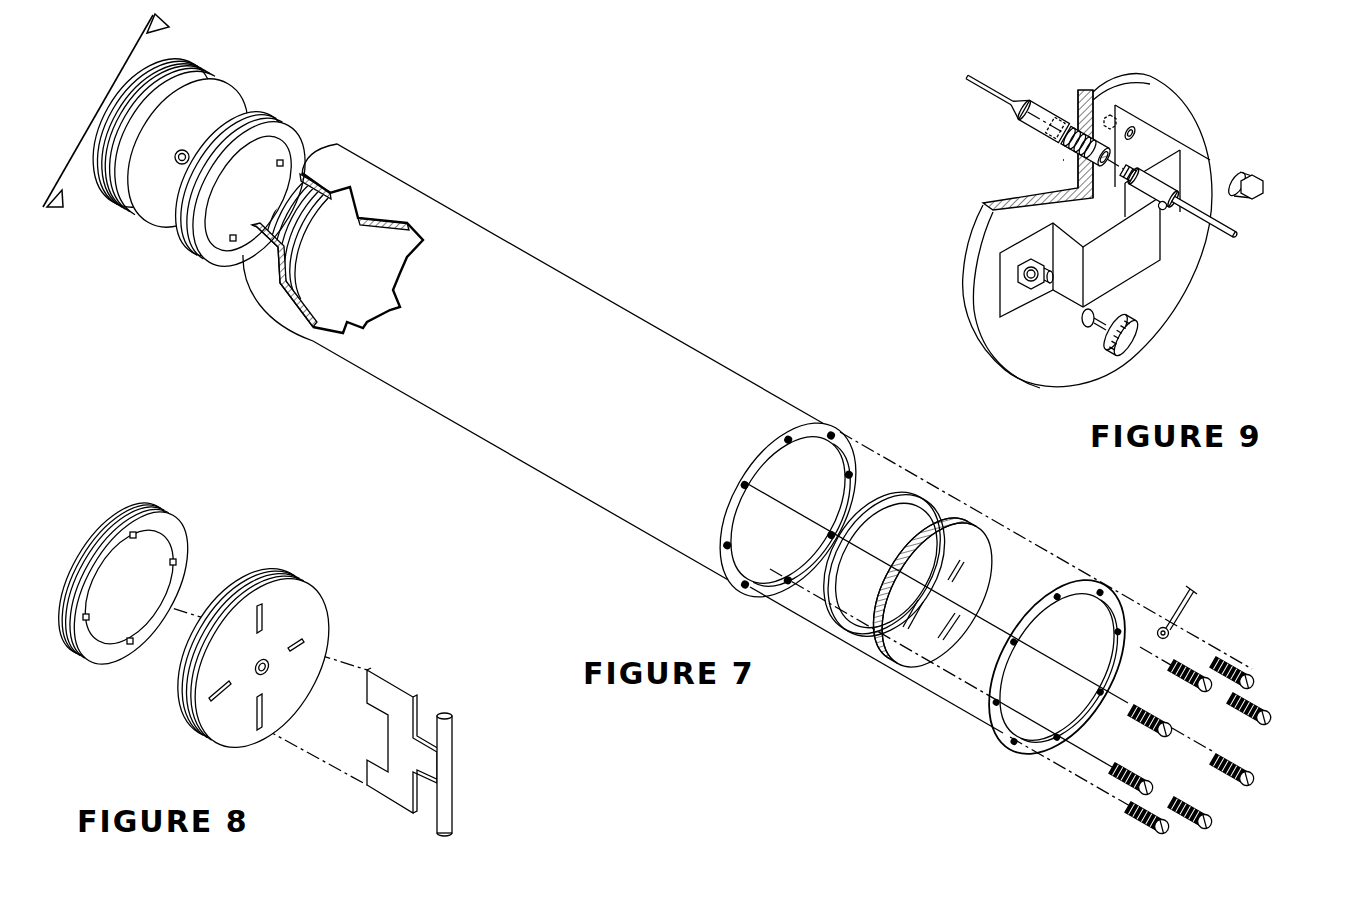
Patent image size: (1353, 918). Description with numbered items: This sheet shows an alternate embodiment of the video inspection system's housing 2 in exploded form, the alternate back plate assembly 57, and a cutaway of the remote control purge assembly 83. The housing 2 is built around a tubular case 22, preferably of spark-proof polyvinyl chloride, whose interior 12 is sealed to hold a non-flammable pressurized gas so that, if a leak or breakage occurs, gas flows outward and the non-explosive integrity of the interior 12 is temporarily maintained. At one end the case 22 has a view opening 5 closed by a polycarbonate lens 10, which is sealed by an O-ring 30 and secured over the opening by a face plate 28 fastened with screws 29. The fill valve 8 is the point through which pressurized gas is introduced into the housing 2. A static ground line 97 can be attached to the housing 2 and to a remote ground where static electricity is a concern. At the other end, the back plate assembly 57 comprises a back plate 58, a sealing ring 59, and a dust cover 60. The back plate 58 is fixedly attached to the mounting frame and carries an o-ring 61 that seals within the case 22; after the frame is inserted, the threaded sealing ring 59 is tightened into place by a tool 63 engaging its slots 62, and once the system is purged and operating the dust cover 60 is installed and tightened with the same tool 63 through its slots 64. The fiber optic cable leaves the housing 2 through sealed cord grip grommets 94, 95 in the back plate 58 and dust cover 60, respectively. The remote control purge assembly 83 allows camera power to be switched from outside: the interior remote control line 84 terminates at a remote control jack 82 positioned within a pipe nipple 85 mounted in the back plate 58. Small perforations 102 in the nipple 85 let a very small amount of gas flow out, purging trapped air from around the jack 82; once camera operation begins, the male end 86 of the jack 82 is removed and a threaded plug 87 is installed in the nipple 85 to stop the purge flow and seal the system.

In FIG. 7, the housing 2 is at (614, 272).
In FIG. 7, the view opening 5 is at (782, 497).
In FIG. 7, the fill valve 8 is at (112, 116).
In FIG. 7, the lens 10 is at (970, 536).
In FIG. 7, the interior 12 is at (362, 314).
In FIG. 7, the tubular case 22 is at (660, 350).
In FIG. 7, the face plate 28 is at (1083, 588).
In FIG. 7, the screws 29 is at (1252, 681).
In FIG. 7, the O-ring 30 is at (897, 497).
In FIG. 7, the back plate assembly 57 is at (217, 176).
In FIG. 8, the back plate assembly 57 is at (219, 633).
In FIG. 9, the back plate 58 is at (1096, 216).
In FIG. 7, the sealing ring 59 is at (285, 133).
In FIG. 8, the sealing ring 59 is at (173, 532).
In FIG. 7, the dust cover 60 is at (220, 100).
In FIG. 8, the dust cover 60 is at (305, 595).
In FIG. 9, the o-ring 61 is at (1085, 95).
In FIG. 7, the slots 62 is at (279, 166).
In FIG. 8, the slots 62 is at (177, 560).
In FIG. 8, the tool 63 is at (453, 755).
In FIG. 8, the slots 64 is at (258, 606).
In FIG. 9, the remote control jack 82 is at (1057, 125).
In FIG. 9, the remote control purge assembly 83 is at (1063, 162).
In FIG. 9, the interior remote control line 84 is at (998, 100).
In FIG. 9, the pipe nipple 85 is at (1043, 143).
In FIG. 9, the male end 86 is at (1228, 222).
In FIG. 9, the threaded plug 87 is at (1252, 173).
In FIG. 9, the cord grip grommet 94 is at (1140, 135).
In FIG. 7, the cord grip grommet 95 is at (183, 148).
In FIG. 8, the cord grip grommet 95 is at (270, 667).
In FIG. 7, the static ground line 97 is at (1172, 616).
In FIG. 9, the perforations 102 is at (1063, 161).